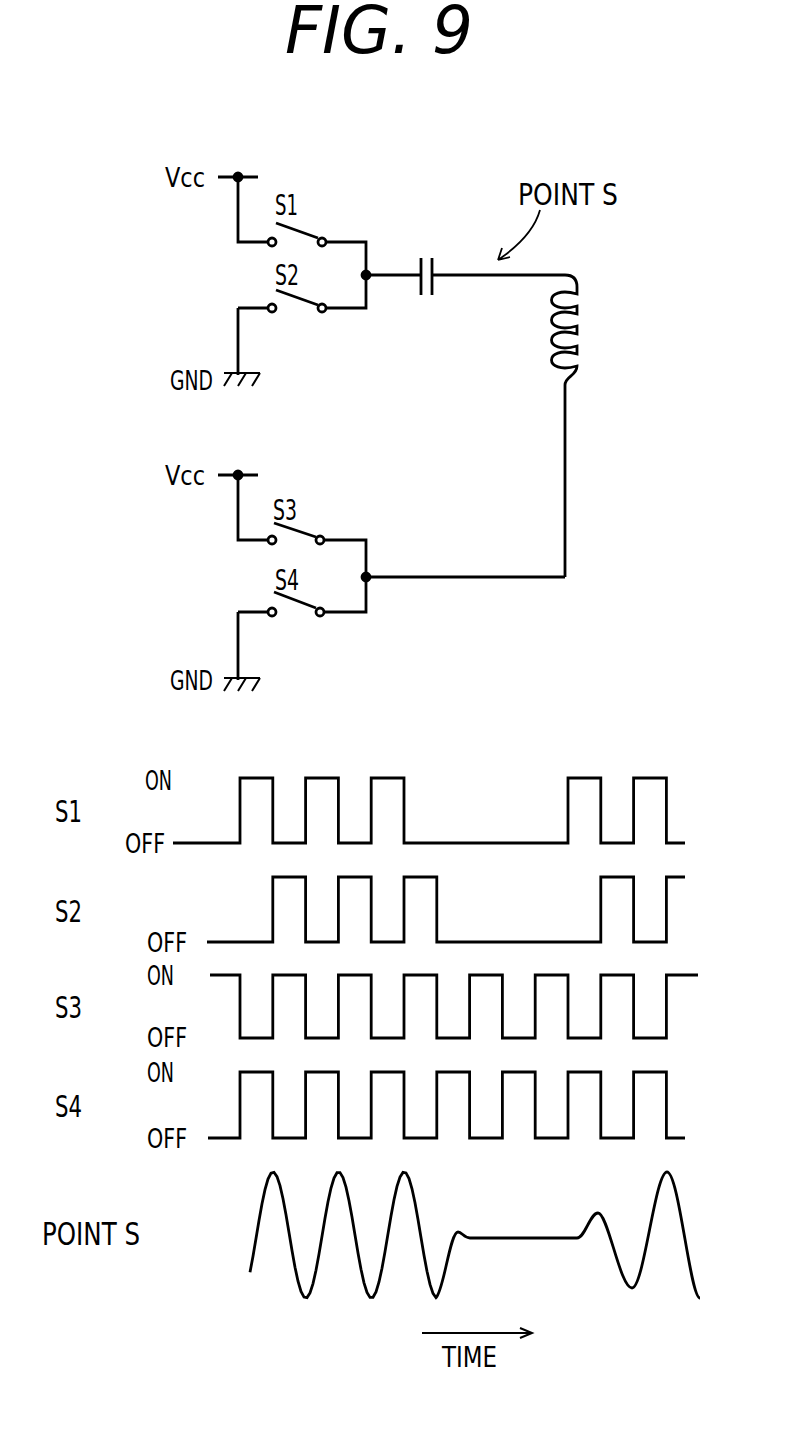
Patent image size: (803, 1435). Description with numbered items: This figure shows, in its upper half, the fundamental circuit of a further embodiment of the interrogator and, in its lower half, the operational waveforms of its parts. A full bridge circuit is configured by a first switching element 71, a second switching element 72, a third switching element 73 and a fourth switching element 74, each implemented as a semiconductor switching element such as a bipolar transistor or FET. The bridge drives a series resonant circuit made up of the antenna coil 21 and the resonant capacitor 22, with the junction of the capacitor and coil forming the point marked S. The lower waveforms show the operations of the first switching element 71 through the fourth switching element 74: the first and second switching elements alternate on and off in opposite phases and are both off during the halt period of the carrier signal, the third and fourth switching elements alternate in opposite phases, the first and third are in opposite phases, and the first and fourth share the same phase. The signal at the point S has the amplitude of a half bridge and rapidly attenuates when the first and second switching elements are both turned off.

The first switching element 71 is at (302, 233).
The second switching element 72 is at (297, 307).
The third switching element 73 is at (302, 533).
The fourth switching element 74 is at (295, 605).
The resonant capacitor 22 is at (435, 267).
The antenna coil 21 is at (578, 331).